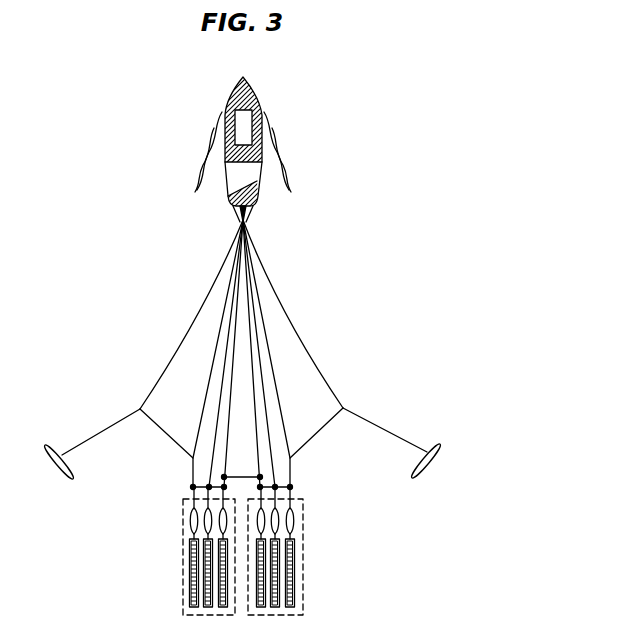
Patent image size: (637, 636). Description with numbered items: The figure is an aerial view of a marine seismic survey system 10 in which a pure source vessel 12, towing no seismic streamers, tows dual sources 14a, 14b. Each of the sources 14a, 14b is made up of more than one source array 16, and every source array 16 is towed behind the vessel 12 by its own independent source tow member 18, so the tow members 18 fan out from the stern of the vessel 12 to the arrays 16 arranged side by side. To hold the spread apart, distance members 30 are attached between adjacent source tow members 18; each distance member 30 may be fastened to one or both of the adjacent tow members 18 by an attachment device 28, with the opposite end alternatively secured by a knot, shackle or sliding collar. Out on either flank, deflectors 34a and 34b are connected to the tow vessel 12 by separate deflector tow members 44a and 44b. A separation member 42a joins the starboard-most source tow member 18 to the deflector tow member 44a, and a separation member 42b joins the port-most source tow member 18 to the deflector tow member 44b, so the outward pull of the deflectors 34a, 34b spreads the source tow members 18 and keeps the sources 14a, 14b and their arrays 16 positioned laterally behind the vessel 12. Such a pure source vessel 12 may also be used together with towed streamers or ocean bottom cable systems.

The marine seismic survey system 10 is at (347, 139).
The pure source vessel 12 is at (239, 94).
The source 14a is at (304, 598).
The source 14b is at (182, 598).
The source array 16 is at (222, 563).
The source tow member 18 is at (250, 300).
The attachment device 28 is at (231, 471).
The distance member 30 is at (280, 492).
The deflector 34a is at (430, 447).
The deflector 34b is at (58, 444).
The separation member 42a is at (327, 424).
The separation member 42b is at (152, 421).
The deflector tow member 44a is at (368, 418).
The deflector tow member 44b is at (125, 416).